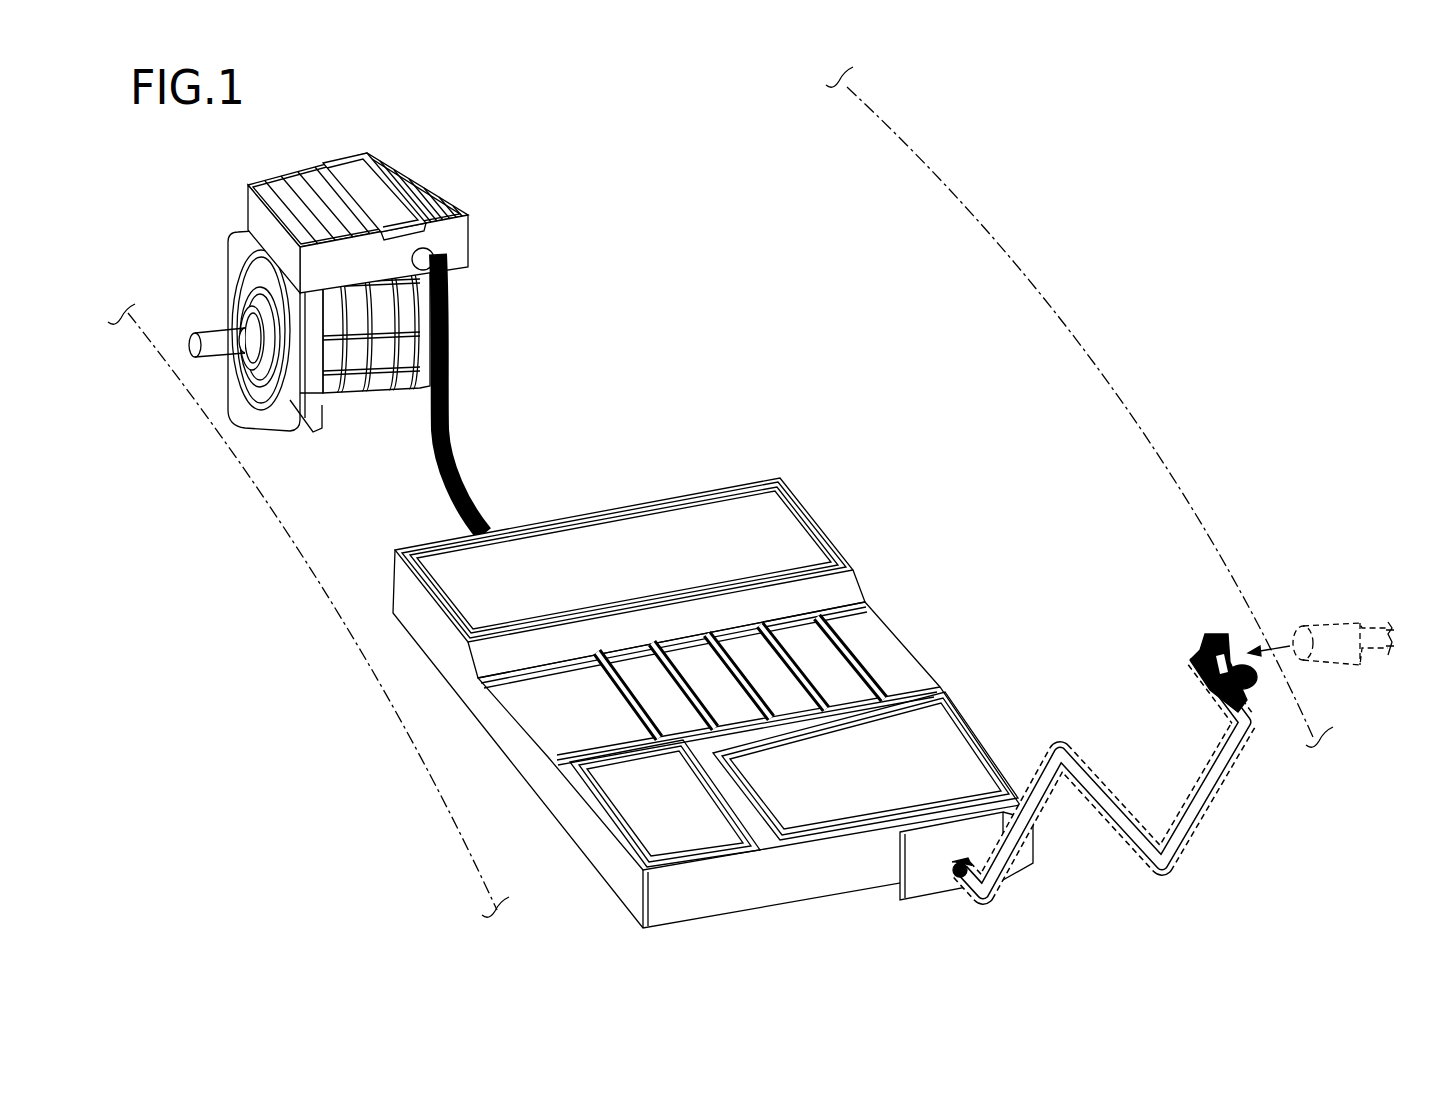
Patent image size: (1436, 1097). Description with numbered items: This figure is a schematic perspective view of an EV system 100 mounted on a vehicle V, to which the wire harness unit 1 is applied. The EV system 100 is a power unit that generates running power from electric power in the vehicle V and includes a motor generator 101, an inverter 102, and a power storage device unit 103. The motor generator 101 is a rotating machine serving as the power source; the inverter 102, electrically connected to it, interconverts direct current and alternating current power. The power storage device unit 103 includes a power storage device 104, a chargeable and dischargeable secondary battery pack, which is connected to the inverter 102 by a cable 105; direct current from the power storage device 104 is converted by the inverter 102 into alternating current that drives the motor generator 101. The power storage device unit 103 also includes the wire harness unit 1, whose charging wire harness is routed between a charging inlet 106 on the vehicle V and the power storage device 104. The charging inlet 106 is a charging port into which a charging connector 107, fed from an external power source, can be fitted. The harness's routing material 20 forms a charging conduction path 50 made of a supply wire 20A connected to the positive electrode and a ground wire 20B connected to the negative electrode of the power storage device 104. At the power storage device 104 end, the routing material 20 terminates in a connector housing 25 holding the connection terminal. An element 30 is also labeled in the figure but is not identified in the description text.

The vehicle V is at (948, 157).
The EV system 100 is at (795, 275).
The motor generator 101 is at (323, 301).
The inverter 102 is at (440, 160).
The power storage device unit 103 is at (1085, 515).
The power storage device 104 is at (912, 605).
The cable 105 is at (463, 425).
The charging inlet 106 is at (1200, 613).
The charging connector 107 is at (1327, 610).
The wire harness unit 1 is at (1150, 567).
The routing material 20 is at (1103, 733).
The supply wire 20A is at (1157, 840).
The ground wire 20B is at (1213, 777).
The exterior member 30 is at (1058, 722).
The connector housing 25 is at (931, 886).
The charging conduction path 50 is at (1216, 903).